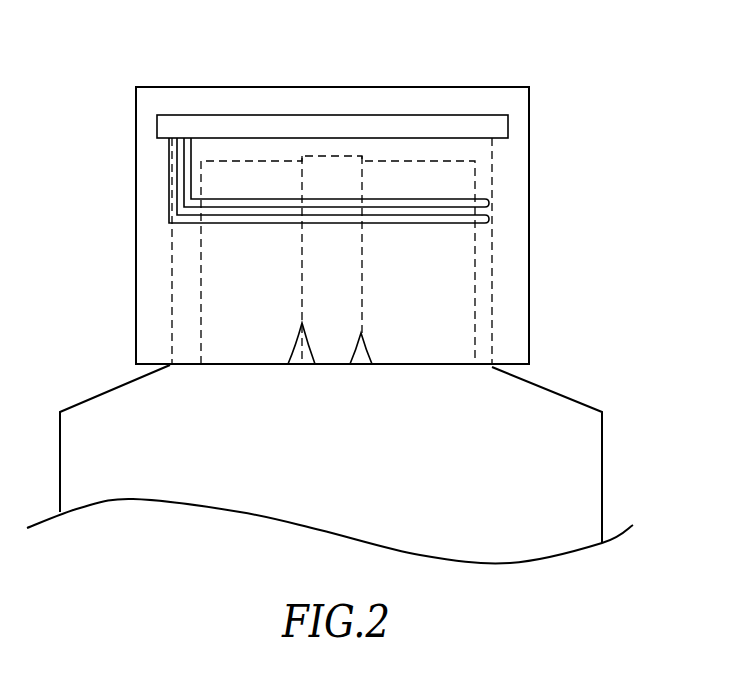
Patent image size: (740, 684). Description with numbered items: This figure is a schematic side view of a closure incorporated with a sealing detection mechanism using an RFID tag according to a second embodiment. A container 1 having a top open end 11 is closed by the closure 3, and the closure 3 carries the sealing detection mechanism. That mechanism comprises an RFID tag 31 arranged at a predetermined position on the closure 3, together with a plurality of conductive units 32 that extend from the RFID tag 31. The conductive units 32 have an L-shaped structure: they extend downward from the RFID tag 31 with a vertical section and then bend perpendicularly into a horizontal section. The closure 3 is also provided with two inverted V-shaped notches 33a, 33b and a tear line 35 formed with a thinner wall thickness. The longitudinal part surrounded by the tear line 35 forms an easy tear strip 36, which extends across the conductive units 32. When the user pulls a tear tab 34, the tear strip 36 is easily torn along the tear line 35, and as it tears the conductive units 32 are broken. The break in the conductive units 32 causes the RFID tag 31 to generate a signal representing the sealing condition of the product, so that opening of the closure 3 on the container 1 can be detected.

The container 1 is at (593, 472).
The closure 3 is at (209, 87).
The top open end 11 is at (450, 160).
The RFID tag 31 is at (163, 127).
The conductive units 32 is at (170, 168).
The inverted V-shaped notch 33a is at (295, 365).
The inverted V-shaped notch 33b is at (370, 365).
The tear tab 34 is at (330, 367).
The tear line 35 is at (313, 152).
The easy tear strip 36 is at (352, 172).